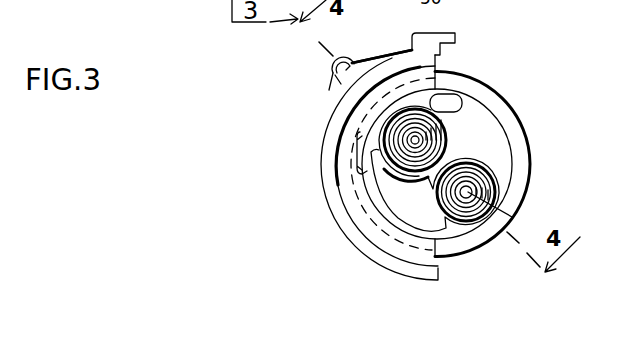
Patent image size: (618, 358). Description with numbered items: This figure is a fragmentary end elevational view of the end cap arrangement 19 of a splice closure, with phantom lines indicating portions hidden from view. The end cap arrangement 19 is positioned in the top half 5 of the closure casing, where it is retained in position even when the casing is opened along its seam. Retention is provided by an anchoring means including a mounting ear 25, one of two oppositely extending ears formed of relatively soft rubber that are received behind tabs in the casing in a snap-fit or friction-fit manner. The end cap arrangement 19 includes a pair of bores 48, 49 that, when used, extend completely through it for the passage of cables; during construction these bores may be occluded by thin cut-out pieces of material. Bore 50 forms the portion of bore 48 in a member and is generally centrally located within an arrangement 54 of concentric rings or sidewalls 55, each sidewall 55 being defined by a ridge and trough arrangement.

The top half 5 is at (390, 60).
The end cap arrangement 19 is at (416, 140).
The mounting ear 25 is at (362, 172).
The bore 48 is at (419, 140).
The bore 49 is at (470, 192).
The bore 50 is at (436, 98).
The arrangement of concentric rings 54 is at (367, 124).
The sidewall 55 is at (407, 176).